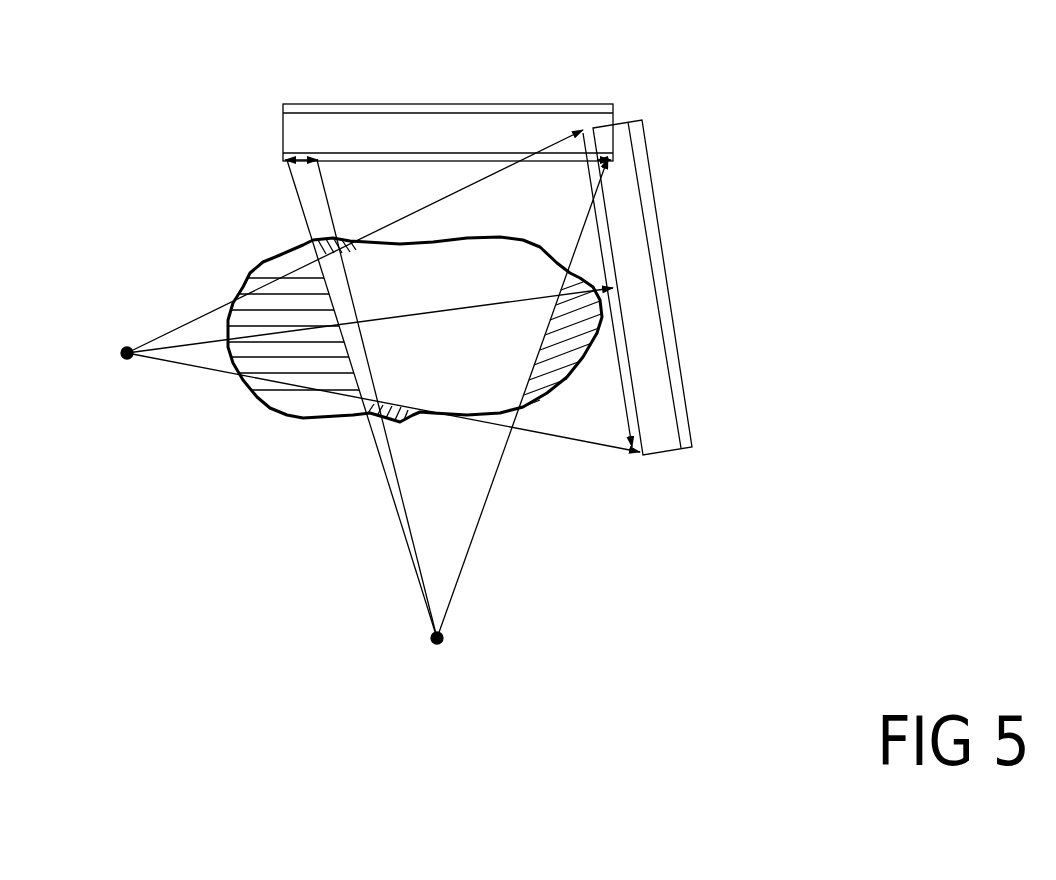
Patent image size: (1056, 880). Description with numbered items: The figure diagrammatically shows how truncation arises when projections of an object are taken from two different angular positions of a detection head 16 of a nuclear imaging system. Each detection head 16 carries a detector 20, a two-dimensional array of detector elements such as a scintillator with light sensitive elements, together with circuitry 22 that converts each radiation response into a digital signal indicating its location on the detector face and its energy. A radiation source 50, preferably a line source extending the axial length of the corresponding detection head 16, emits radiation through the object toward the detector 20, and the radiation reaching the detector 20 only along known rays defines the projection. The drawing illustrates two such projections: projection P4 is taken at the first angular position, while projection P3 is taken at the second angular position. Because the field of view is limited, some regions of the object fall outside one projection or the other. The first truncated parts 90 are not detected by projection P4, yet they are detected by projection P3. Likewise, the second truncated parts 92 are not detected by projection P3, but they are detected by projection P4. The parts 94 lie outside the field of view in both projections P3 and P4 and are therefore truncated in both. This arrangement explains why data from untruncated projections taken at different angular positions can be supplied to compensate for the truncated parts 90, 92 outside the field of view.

The detection head 16 is at (488, 272).
The detector 20 is at (283, 128).
The circuitry 22 is at (319, 110).
The radiation source 50 is at (121, 342).
The first truncated parts 90 is at (328, 238).
The second truncated parts 92 is at (263, 365).
The parts truncated in both projections 94 is at (263, 273).
The projection P3 is at (364, 163).
The projection P4 is at (597, 248).